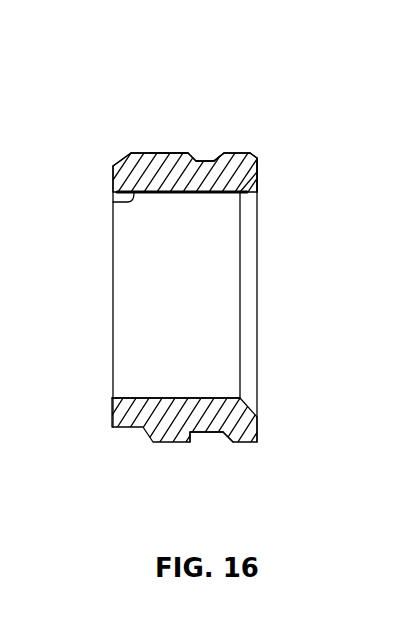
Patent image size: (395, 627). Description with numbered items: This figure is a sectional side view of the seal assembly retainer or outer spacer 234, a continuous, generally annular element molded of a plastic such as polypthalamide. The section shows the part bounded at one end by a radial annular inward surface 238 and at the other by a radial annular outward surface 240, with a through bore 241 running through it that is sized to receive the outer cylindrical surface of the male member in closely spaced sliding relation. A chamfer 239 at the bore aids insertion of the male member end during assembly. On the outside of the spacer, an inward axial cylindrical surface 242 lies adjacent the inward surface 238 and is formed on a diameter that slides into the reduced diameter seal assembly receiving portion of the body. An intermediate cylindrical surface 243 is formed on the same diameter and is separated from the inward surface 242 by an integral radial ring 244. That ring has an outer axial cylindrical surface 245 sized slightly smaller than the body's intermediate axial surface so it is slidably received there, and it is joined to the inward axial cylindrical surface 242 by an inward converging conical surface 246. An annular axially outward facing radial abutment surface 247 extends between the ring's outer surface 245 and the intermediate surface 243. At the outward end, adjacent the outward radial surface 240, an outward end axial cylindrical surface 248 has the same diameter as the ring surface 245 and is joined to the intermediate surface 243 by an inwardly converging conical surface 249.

The outer spacer 234 is at (108, 220).
The radial annular inward surface 238 is at (112, 173).
The chamfer 239 is at (258, 188).
The radial annular outward surface 240 is at (258, 163).
The through bore 241 is at (110, 202).
The inward axial cylindrical surface 242 is at (127, 156).
The intermediate cylindrical surface 243 is at (235, 152).
The integral radial ring 244 is at (163, 153).
The outer axial cylindrical surface 245 is at (193, 156).
The inward converging conical surface 246 is at (147, 152).
The annular axially outward facing radial abutment surface 247 is at (213, 156).
The outward end axial cylindrical surface 248 is at (248, 445).
The inwardly converging conical surface 249 is at (222, 446).